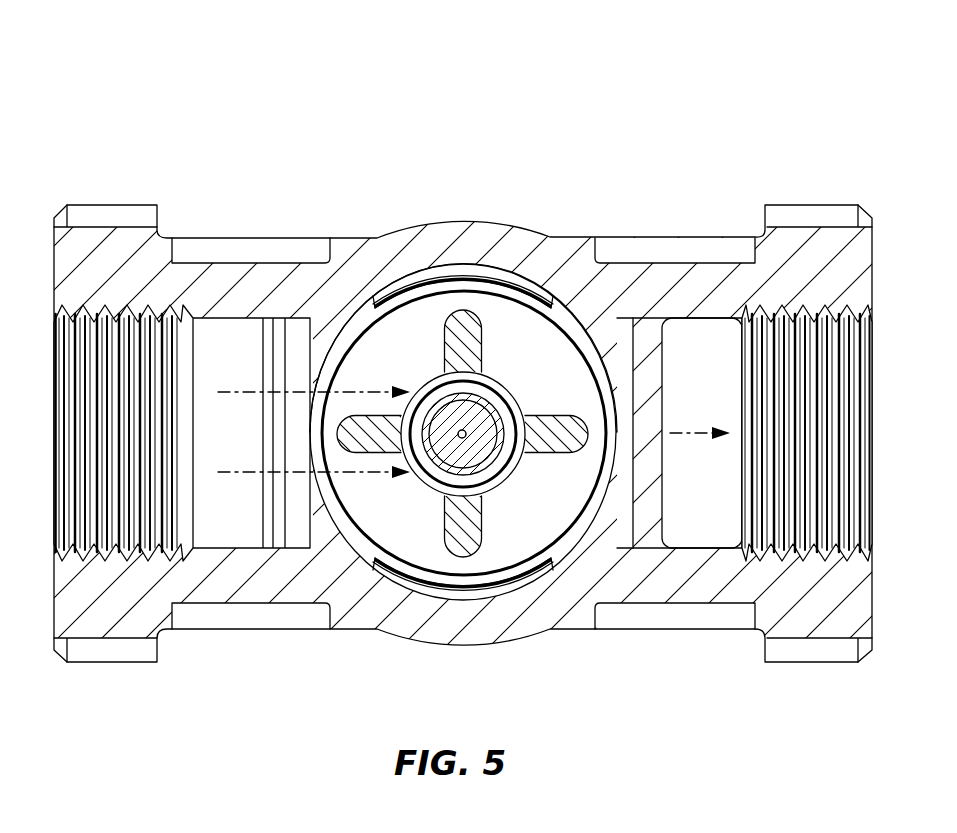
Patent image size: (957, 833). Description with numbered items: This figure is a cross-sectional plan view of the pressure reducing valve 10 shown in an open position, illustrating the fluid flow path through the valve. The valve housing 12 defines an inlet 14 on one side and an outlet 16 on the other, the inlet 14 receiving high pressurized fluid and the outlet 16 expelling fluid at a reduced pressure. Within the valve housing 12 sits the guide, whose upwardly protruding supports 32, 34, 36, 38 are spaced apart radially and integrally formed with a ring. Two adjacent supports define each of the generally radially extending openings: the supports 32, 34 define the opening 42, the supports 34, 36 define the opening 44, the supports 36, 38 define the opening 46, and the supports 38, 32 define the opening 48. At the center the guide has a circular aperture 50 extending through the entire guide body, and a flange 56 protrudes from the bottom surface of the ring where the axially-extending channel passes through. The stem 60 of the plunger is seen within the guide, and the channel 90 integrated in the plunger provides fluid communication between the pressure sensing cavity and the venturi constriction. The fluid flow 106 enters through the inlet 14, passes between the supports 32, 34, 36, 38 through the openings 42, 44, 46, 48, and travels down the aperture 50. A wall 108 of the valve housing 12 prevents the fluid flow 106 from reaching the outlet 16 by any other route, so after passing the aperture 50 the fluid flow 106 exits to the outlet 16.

The pressure reducing valve 10 is at (478, 361).
The valve housing 12 is at (405, 630).
The inlet 14 is at (40, 505).
The outlet 16 is at (884, 504).
The support 32 is at (382, 435).
The support 34 is at (462, 558).
The support 36 is at (575, 438).
The support 38 is at (468, 332).
The opening 42 is at (406, 538).
The opening 44 is at (544, 535).
The opening 46 is at (502, 318).
The opening 48 is at (388, 354).
The circular aperture 50 is at (512, 452).
The flange 56 is at (463, 465).
The stem 60 is at (509, 445).
The channel 90 is at (468, 430).
The fluid flow 106 is at (248, 472).
The wall 108 is at (647, 378).